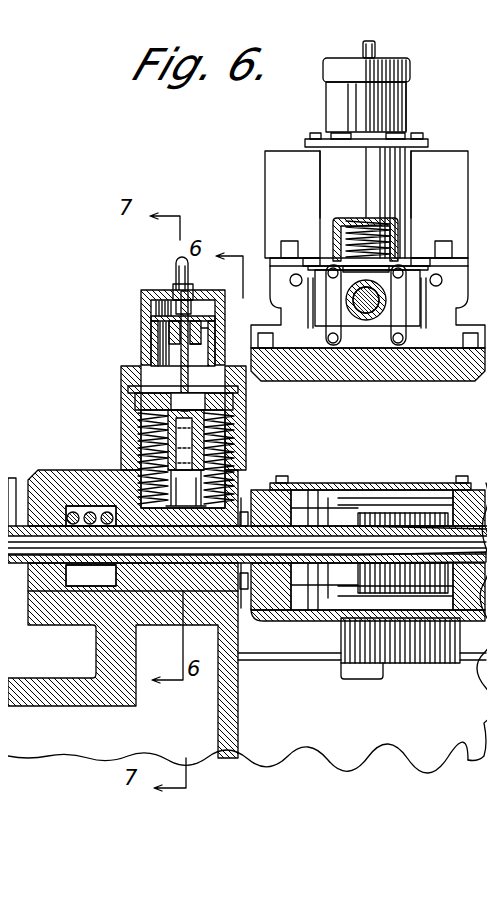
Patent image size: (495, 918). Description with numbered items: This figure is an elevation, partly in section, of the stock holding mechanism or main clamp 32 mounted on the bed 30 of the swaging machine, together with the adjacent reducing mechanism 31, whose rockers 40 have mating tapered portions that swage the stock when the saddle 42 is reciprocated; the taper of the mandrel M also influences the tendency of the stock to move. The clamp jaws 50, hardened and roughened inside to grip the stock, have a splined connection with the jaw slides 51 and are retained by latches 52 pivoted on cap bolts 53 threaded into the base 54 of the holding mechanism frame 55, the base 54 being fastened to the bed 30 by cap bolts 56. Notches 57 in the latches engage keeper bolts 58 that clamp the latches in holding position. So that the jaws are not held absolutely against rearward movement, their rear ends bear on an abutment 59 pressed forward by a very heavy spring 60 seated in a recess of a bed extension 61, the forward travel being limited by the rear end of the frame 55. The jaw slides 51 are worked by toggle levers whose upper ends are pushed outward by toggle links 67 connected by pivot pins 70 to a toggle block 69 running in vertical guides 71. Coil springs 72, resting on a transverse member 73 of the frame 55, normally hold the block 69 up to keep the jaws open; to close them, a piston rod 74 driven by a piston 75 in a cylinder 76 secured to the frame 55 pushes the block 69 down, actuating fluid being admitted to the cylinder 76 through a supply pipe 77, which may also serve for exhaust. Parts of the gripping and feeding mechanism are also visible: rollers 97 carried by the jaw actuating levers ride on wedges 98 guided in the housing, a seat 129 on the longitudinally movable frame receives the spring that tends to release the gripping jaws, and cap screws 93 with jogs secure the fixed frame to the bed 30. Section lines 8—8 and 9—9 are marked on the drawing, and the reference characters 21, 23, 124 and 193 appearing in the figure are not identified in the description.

The supply pipe 77 is at (367, 38).
The cylinder 76 is at (318, 100).
The stock holding mechanism or main clamp 32 is at (438, 138).
The coil springs 72 is at (360, 212).
The bolts 58 is at (325, 258).
The bed 30 is at (450, 372).
The jaw slides 51 is at (468, 380).
The mandrel M is at (415, 270).
The clamp jaws 50 is at (358, 312).
The notches 57 is at (325, 310).
The cap bolts 53 is at (322, 337).
The latches 52 is at (328, 336).
The base 54 is at (412, 330).
The holding mechanism frame 55 is at (440, 312).
The cap bolts 56 is at (470, 318).
The piston 75 is at (134, 312).
The piston rod 74 is at (150, 345).
The toggle block 69 is at (114, 380).
The pivot pins 70 is at (127, 400).
The toggle links 67 is at (130, 420).
The vertical guides 71 is at (112, 468).
The abutment 59 is at (35, 470).
The spring 60 is at (60, 500).
The bed extension 61 is at (28, 465).
The transverse member 73 is at (205, 575).
The reducing mechanism 31 is at (378, 472).
The saddle 42 is at (303, 490).
The rockers 40 is at (395, 505).
The conduit 21 is at (16, 219).
The pipe 124 is at (25, 244).
The seat 129 is at (52, 404).
The passage 8 is at (60, 321).
The pipe 23 is at (19, 349).
The wedges 98 is at (16, 578).
The rollers 97 is at (16, 601).
The cap screws 93 is at (17, 623).
The chamber 193 is at (26, 645).
The passage 9 is at (12, 708).